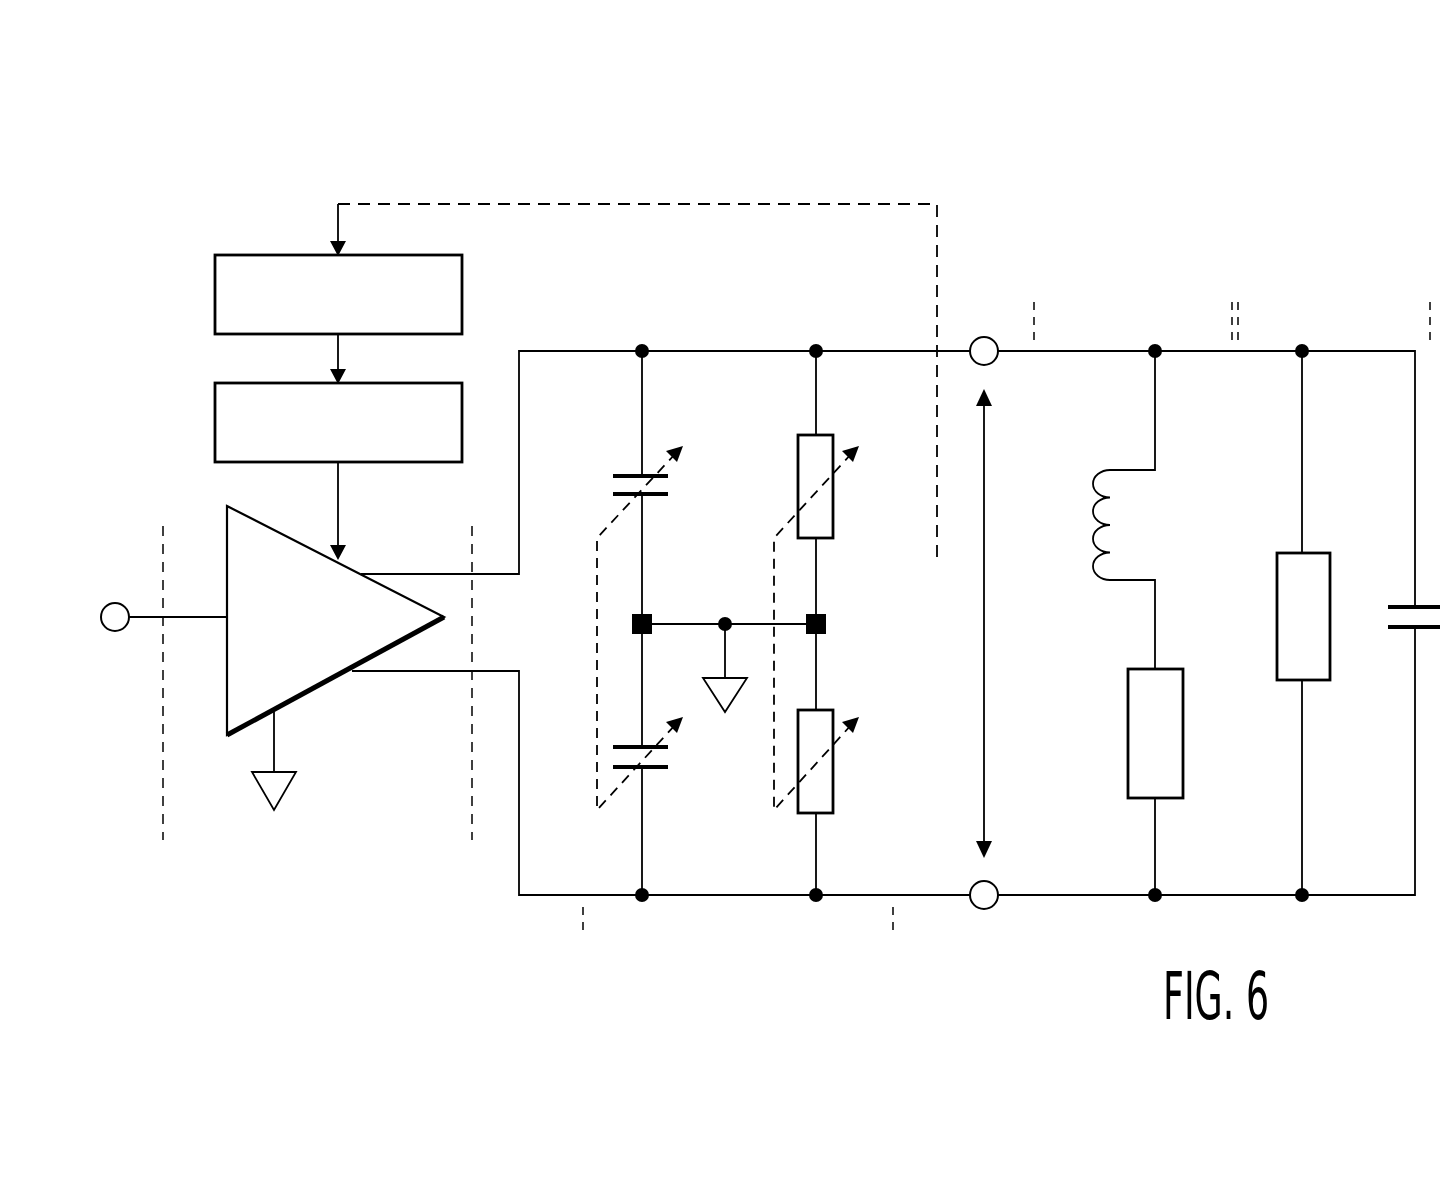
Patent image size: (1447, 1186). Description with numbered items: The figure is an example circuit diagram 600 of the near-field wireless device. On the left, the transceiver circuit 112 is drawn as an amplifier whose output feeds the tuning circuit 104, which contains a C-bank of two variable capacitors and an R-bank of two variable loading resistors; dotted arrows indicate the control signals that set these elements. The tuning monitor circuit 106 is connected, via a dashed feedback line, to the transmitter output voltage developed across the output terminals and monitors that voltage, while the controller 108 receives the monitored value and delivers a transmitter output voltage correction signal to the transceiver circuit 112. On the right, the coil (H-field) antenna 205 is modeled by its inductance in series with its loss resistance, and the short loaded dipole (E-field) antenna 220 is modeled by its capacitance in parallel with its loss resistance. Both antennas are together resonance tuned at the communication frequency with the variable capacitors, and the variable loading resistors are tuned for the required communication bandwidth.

The circuit diagram 600 is at (163, 219).
The tuning monitor circuit 106 is at (215, 312).
The controller 108 is at (215, 434).
The transceiver circuit 112 is at (472, 840).
The tuning circuit 104 is at (893, 937).
The coil (H-field) antenna 205 is at (1232, 302).
The short loaded dipole (E-field) antenna 220 is at (1430, 302).